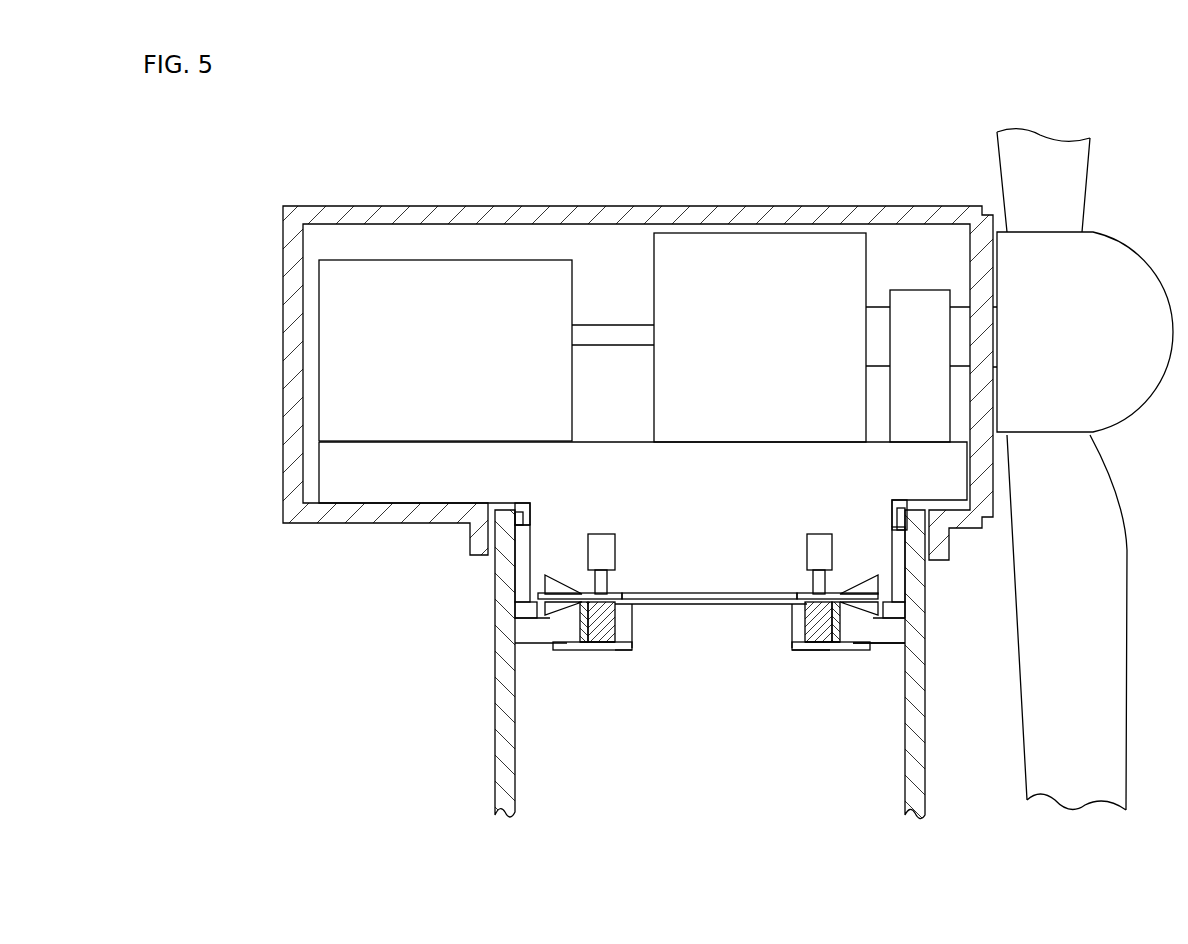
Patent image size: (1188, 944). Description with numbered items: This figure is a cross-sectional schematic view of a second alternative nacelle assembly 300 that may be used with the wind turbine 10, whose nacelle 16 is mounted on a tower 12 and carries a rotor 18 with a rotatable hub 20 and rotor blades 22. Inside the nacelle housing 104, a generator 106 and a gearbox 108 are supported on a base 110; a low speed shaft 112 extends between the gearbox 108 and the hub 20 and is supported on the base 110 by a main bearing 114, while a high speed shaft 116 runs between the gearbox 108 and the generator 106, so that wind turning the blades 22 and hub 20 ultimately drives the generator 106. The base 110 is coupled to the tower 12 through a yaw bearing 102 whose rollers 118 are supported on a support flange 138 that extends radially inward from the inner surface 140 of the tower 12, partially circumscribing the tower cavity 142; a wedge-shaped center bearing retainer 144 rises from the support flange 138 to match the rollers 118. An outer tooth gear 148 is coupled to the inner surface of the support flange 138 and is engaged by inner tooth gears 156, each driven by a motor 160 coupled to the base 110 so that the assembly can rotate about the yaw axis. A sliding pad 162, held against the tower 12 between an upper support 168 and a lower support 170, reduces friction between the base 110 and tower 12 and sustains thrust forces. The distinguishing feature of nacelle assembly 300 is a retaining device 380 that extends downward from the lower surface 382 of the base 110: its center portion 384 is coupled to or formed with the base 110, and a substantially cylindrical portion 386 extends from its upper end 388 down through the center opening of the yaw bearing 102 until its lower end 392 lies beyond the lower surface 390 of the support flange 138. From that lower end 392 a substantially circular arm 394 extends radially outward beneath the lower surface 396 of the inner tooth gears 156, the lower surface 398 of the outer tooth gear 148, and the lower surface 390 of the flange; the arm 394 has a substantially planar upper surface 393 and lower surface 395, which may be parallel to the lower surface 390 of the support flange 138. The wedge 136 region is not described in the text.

The wind turbine 10 is at (236, 150).
The tower 12 is at (917, 777).
The nacelle 16 is at (387, 184).
The rotor 18 is at (958, 262).
The hub 20 is at (1120, 277).
The rotor blades 22 is at (1075, 157).
The yaw bearing 102 is at (799, 566).
The nacelle housing 104 is at (735, 205).
The generator 106 is at (445, 364).
The gearbox 108 is at (784, 350).
The base 110 is at (703, 494).
The low speed shaft 112 is at (876, 307).
The main bearing 114 is at (939, 367).
The high speed shaft 116 is at (595, 325).
The rollers 118 is at (548, 580).
The upper wedge 136 is at (563, 583).
The support flange 138 is at (527, 630).
The inner surface 140 is at (517, 793).
The cavity 142 is at (725, 827).
The center bearing retainer 144 is at (565, 617).
The outer tooth gear 148 is at (587, 562).
The inner tooth gear 156 is at (617, 597).
The motor 160 is at (603, 533).
The sliding pad 162 is at (518, 562).
The upper support 168 is at (520, 512).
The lower support 170 is at (517, 607).
The nacelle assembly 300 is at (374, 617).
The retaining device 380 is at (720, 661).
The lower surface 382 is at (690, 592).
The center portion 384 is at (717, 600).
The cylindrical portion 386 is at (792, 640).
The upper end 388 is at (632, 627).
The lower surface 390 is at (877, 650).
The lower end 392 is at (625, 650).
The upper surface 393 is at (810, 650).
The arm 394 is at (610, 650).
The lower surface 395 is at (857, 650).
The lower surface 396 is at (597, 650).
The lower surface 398 is at (585, 648).